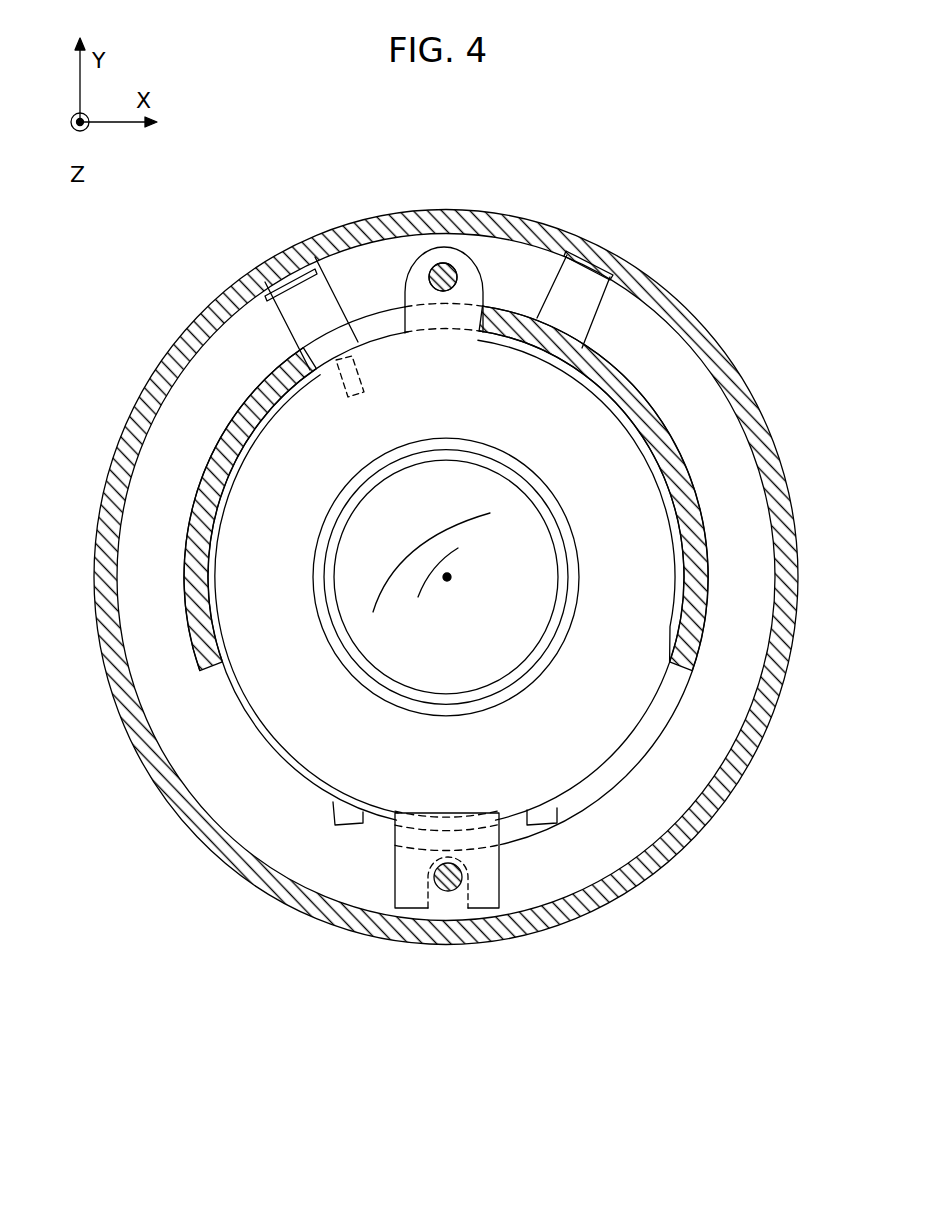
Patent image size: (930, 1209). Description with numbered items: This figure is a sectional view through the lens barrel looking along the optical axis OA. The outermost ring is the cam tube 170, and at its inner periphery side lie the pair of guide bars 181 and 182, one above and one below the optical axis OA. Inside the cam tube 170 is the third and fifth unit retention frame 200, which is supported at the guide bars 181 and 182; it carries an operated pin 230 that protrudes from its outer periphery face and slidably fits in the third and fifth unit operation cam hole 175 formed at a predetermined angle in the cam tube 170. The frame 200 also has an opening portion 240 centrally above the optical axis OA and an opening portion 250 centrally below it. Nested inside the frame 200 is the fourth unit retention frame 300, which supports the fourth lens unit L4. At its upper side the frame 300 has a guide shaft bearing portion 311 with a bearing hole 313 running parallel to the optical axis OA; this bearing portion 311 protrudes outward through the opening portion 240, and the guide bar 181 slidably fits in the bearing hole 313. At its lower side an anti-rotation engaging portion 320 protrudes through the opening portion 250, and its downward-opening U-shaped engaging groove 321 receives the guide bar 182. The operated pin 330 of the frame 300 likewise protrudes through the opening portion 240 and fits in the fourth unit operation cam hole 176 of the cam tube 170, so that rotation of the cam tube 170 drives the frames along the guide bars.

The cam tube 170 is at (168, 352).
The third and fifth unit operation cam hole 175 is at (598, 243).
The fourth unit operation cam hole 176 is at (300, 240).
The guide bar 181 is at (428, 271).
The guide bar 182 is at (448, 891).
The third and fifth unit retention frame 200 is at (280, 308).
The operated pin 230 is at (600, 312).
The opening portion 240 is at (483, 283).
The opening portion 250 is at (680, 670).
The fourth unit retention frame 300 is at (245, 500).
The guide shaft bearing portion 311 is at (470, 248).
The bearing hole 313 is at (445, 263).
The anti-rotation engaging portion 320 is at (393, 883).
The engaging groove 321 is at (457, 903).
The operated pin 330 is at (247, 397).
The optical axis OA is at (446, 578).
The fourth lens unit L4 is at (415, 668).